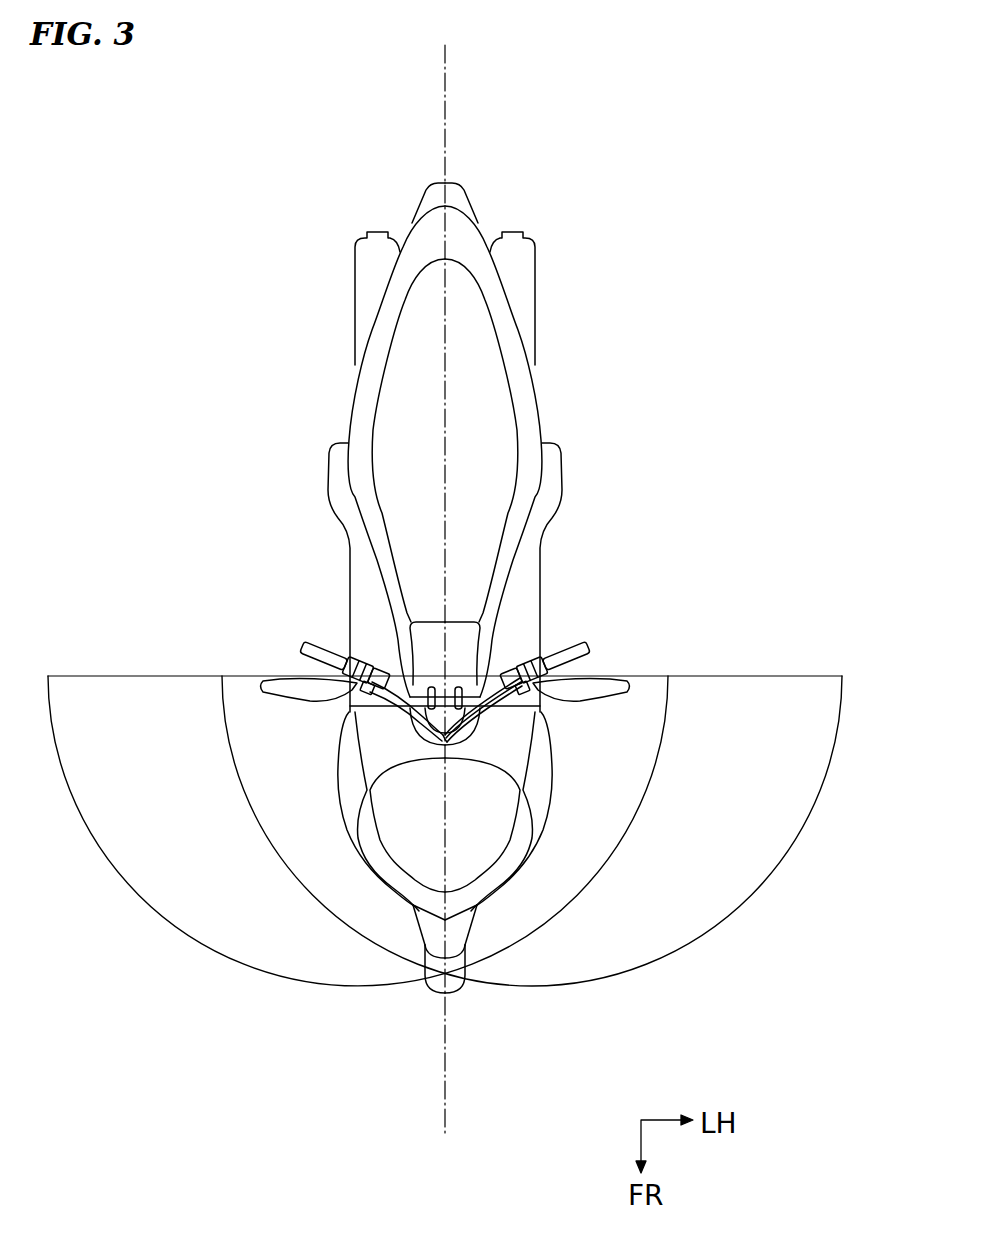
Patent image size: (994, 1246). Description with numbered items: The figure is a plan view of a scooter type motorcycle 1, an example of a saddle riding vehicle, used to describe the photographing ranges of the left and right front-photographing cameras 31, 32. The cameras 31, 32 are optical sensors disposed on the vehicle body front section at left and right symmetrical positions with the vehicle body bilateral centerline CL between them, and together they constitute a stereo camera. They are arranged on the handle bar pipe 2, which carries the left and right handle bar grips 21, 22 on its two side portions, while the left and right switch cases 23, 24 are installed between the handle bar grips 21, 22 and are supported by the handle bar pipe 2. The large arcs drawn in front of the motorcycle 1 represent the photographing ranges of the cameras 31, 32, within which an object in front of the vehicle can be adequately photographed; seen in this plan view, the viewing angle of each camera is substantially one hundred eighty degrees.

The motorcycle 1 is at (553, 291).
The handle bar pipe 2 is at (497, 676).
The right handle bar grip 21 is at (590, 657).
The left handle bar grip 22 is at (318, 661).
The right switch case 23 is at (543, 644).
The left switch case 24 is at (352, 647).
The right front-photographing camera 31 is at (533, 647).
The left front-photographing camera 32 is at (357, 657).